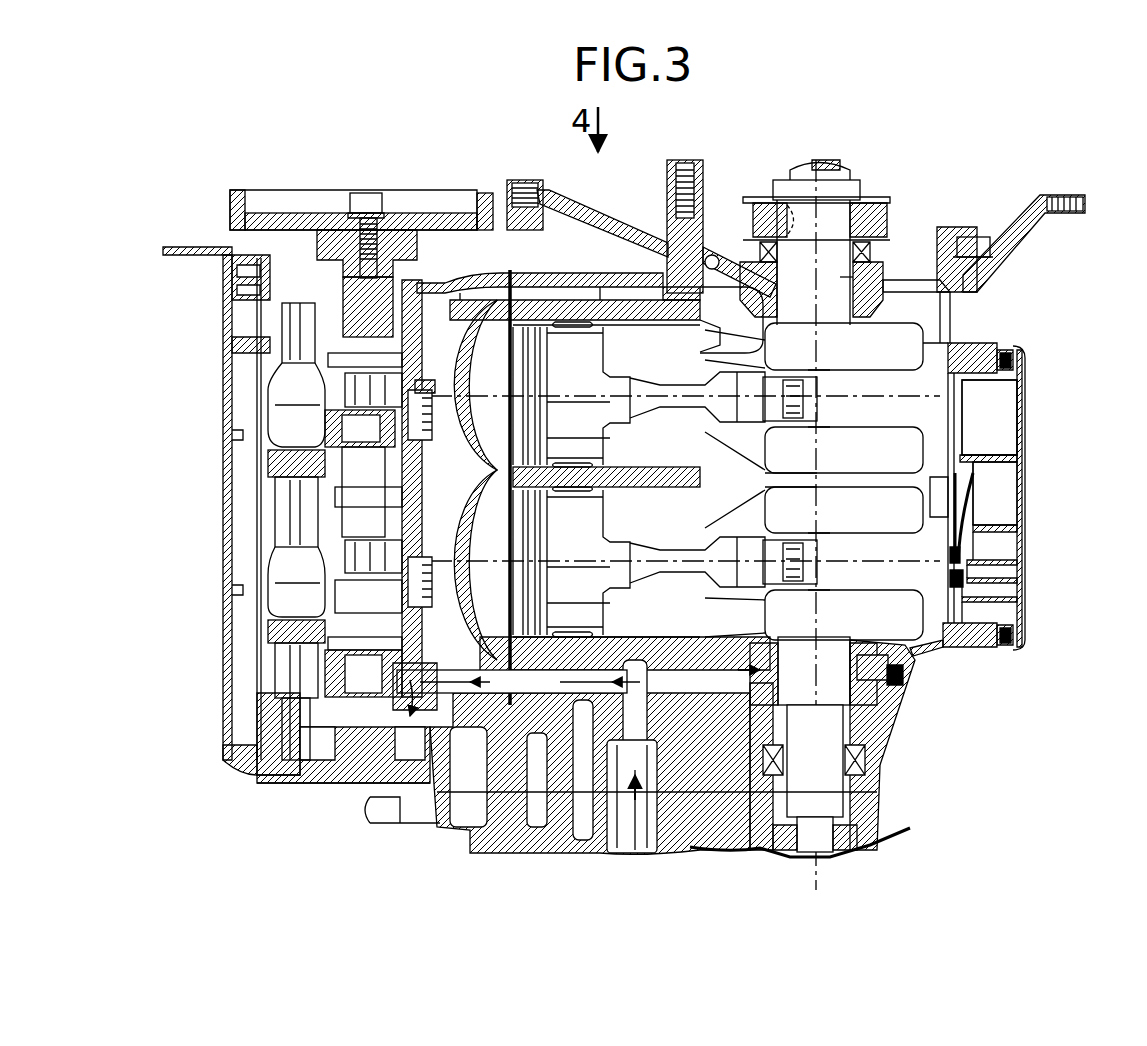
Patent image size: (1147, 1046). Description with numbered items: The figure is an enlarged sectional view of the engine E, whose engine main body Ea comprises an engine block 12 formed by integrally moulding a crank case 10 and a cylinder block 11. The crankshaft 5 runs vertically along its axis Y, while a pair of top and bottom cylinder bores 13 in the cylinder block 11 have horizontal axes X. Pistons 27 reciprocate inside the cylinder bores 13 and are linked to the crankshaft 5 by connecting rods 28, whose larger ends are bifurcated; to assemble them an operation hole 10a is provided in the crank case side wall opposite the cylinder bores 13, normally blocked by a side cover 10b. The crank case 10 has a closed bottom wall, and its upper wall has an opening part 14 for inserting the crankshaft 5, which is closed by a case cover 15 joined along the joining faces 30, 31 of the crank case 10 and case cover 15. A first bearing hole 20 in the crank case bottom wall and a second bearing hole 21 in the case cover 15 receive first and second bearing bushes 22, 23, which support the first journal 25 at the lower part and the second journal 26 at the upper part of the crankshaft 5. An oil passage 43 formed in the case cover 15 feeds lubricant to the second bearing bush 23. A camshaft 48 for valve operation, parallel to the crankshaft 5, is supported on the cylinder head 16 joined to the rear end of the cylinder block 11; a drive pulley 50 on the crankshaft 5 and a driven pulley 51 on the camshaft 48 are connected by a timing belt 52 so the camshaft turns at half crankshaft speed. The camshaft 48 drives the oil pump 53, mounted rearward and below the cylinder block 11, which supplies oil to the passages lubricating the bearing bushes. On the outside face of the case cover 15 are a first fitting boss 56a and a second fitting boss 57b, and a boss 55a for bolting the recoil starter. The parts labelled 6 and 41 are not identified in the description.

The crankshaft 5 is at (787, 163).
The oil pan / lower case 6 is at (867, 836).
The crank case 10 is at (981, 343).
The operation hole 10a is at (987, 380).
The side cover 10b is at (1023, 520).
The cylinder block 11 is at (597, 300).
The engine block 12 is at (570, 278).
The cylinder bores 13 is at (643, 330).
The opening part 14 is at (997, 240).
The case cover 15 is at (923, 287).
The cylinder head 16 is at (437, 290).
The first bearing hole 20 is at (870, 732).
The second bearing hole 21 is at (840, 323).
The first bearing bush 22 is at (722, 624).
The second bearing bush 23 is at (797, 375).
The first journal 25 is at (793, 652).
The second journal 26 is at (853, 277).
The pistons 27 is at (585, 381).
The connecting rods 28 is at (672, 400).
The joining face 30 is at (683, 275).
The joining face 31 is at (703, 294).
The oil pipe 41 is at (723, 667).
The oil passage 43 is at (723, 257).
The camshaft 48 is at (377, 528).
The drive pulley 50 is at (873, 207).
The driven pulley 51 is at (268, 215).
The timing belt 52 is at (640, 197).
The oil pump 53 is at (300, 765).
The boss 55a is at (513, 187).
The first fitting boss 56a is at (690, 162).
The second fitting boss 57b is at (950, 227).
The engine E is at (212, 375).
The engine main body Ea is at (993, 292).
The axes of the cylinder bores X is at (466, 341).
The axis of the crankshaft Y is at (830, 207).